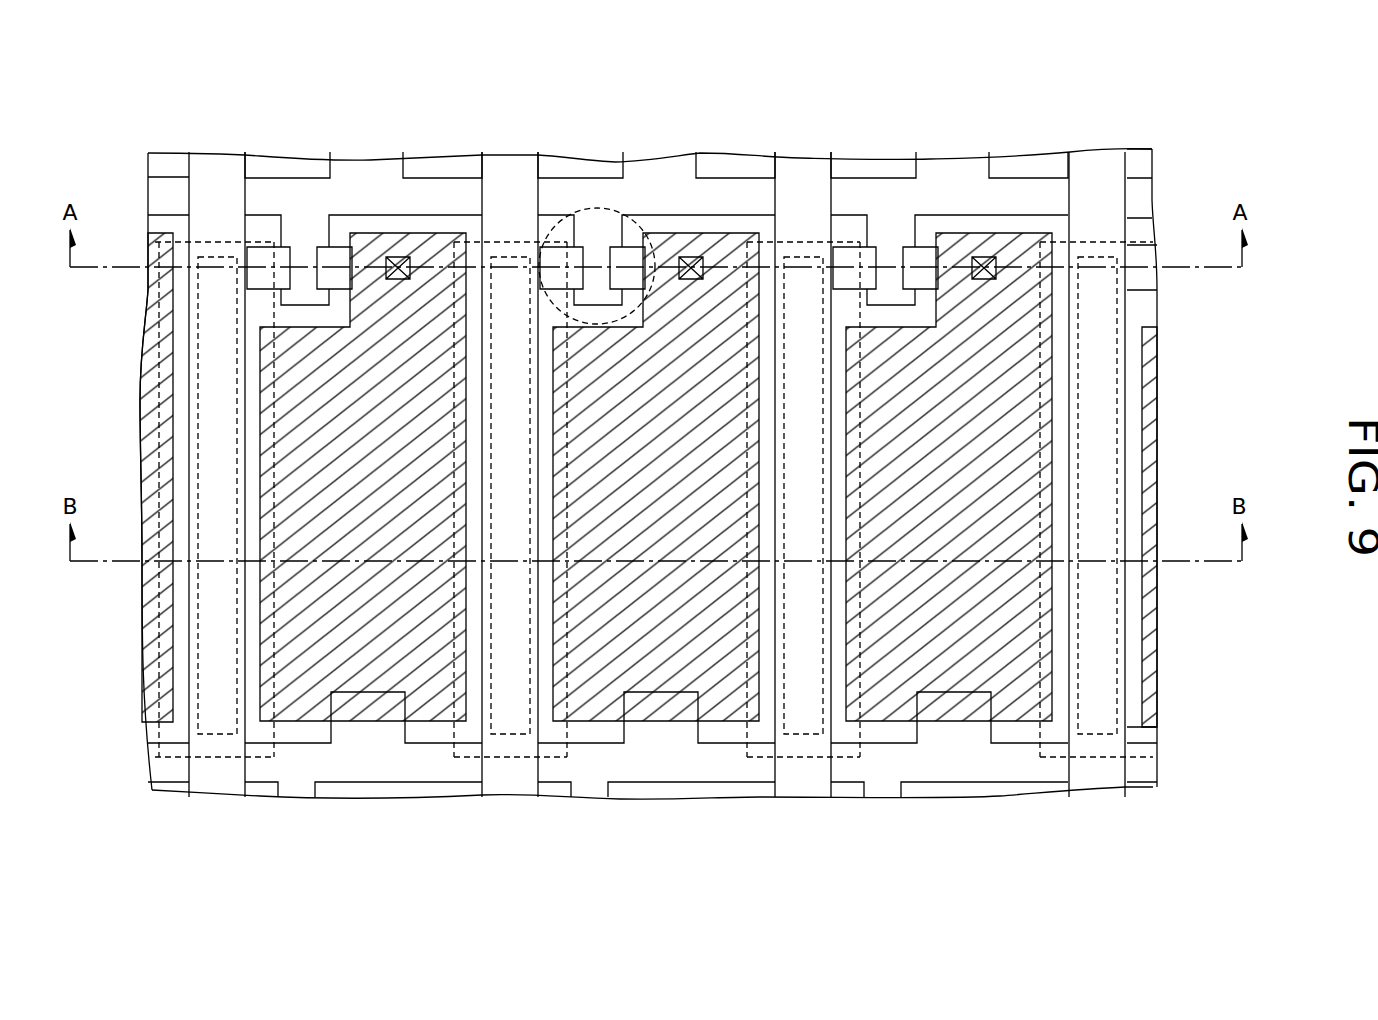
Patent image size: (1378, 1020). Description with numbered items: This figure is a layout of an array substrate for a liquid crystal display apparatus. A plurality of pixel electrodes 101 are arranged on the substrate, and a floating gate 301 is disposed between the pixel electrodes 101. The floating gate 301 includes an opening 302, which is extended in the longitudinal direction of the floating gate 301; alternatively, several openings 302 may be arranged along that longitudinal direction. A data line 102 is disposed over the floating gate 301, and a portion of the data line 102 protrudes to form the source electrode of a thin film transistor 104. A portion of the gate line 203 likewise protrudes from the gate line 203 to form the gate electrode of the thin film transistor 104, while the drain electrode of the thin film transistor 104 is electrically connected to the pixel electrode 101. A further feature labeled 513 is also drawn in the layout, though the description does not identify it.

The pixel electrode 101 is at (1027, 421).
The data line 102 is at (1103, 158).
The thin film transistor 104 is at (652, 246).
The gate line 203 is at (972, 773).
The floating gate 301 is at (850, 242).
The opening 302 is at (813, 285).
The contact hole 513 is at (982, 257).